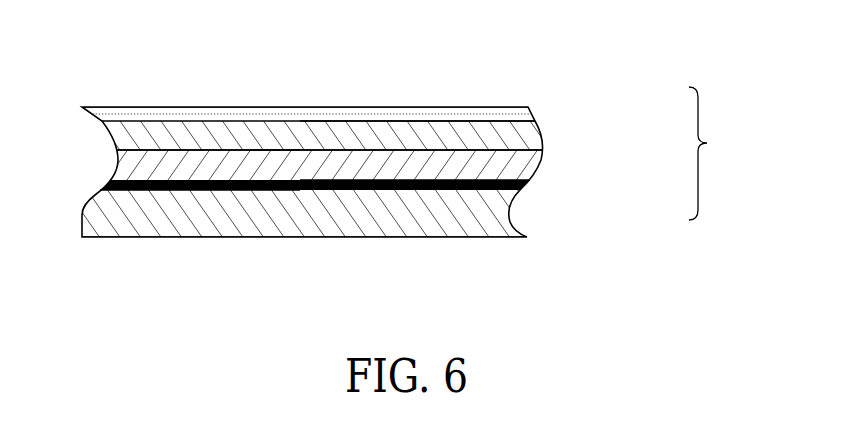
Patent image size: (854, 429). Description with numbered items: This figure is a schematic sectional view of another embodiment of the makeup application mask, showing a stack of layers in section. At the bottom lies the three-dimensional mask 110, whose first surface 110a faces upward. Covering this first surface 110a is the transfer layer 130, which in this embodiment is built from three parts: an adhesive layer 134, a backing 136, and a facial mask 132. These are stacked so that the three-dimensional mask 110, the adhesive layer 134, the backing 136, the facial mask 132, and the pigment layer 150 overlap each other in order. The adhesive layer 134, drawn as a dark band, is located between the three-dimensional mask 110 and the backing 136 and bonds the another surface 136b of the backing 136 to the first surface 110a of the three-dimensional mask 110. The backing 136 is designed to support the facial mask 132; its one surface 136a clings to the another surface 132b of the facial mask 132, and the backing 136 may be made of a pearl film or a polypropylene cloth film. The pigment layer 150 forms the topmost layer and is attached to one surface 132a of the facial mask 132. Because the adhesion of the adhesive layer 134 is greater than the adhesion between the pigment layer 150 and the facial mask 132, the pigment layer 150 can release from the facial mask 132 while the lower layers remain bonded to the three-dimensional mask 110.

The three-dimensional mask 110 is at (468, 217).
The first surface of the three-dimensional mask 110a is at (438, 180).
The transfer layer 130 is at (718, 153).
The facial mask 132 is at (530, 136).
The one surface of the facial mask 132a is at (422, 120).
The another surface of the facial mask 132b is at (318, 152).
The adhesive layer 134 is at (520, 185).
The backing 136 is at (525, 158).
The one surface of the backing 136a is at (146, 149).
The another surface of the backing 136b is at (175, 189).
The pigment layer 150 is at (229, 113).